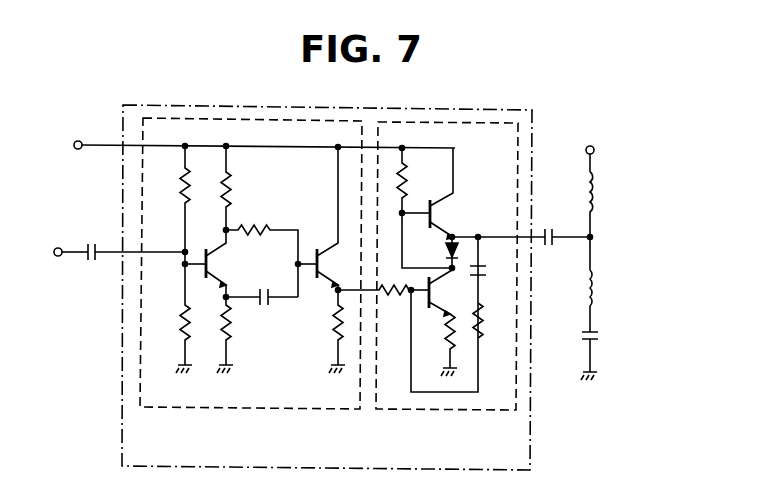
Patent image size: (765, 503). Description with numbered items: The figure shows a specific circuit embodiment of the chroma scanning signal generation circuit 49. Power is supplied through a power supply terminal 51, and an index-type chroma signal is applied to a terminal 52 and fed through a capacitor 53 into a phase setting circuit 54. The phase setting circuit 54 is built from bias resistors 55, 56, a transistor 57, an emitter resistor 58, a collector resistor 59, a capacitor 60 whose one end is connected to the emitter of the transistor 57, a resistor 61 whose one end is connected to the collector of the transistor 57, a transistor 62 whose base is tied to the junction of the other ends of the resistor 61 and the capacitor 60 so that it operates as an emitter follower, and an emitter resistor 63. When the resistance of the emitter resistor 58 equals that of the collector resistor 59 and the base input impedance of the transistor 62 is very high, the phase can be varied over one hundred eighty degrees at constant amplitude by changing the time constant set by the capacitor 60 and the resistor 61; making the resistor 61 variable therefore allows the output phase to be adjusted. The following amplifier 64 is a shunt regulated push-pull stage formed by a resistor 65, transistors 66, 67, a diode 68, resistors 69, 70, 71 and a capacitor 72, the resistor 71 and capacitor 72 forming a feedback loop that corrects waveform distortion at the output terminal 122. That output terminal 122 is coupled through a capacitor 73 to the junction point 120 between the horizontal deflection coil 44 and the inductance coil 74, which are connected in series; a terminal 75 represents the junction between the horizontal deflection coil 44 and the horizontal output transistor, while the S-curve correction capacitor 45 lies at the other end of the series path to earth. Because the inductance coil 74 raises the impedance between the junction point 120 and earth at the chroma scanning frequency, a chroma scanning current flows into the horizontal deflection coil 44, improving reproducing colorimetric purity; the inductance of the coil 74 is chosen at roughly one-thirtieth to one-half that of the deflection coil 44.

The chroma scanning signal generation circuit 49 is at (530, 415).
The phase setting circuit 54 is at (222, 407).
The amplifier 64 is at (410, 410).
The power supply terminal 51 is at (80, 150).
The terminal 52 is at (60, 257).
The capacitor 53 is at (98, 258).
The bias resistor 55 is at (174, 332).
The bias resistor 56 is at (184, 190).
The transistor 57 is at (222, 269).
The emitter resistor 58 is at (236, 328).
The collector resistor 59 is at (229, 196).
The capacitor 60 is at (267, 306).
The resistor 61 is at (258, 230).
The transistor 62 is at (316, 280).
The emitter resistor 63 is at (327, 335).
The resistor 65 is at (388, 296).
The transistor 66 is at (432, 294).
The transistor 67 is at (450, 214).
The diode 68 is at (448, 248).
The resistor 69 is at (449, 336).
The resistor 70 is at (407, 179).
The resistor 71 is at (483, 323).
The capacitor 72 is at (486, 268).
The capacitor 73 is at (548, 231).
The junction point 120 is at (594, 237).
The output terminal 122 is at (456, 237).
The terminal 75 is at (596, 146).
The horizontal deflection coil 44 is at (603, 199).
The inductance coil 74 is at (598, 293).
The S-curve correction capacitor 45 is at (600, 336).